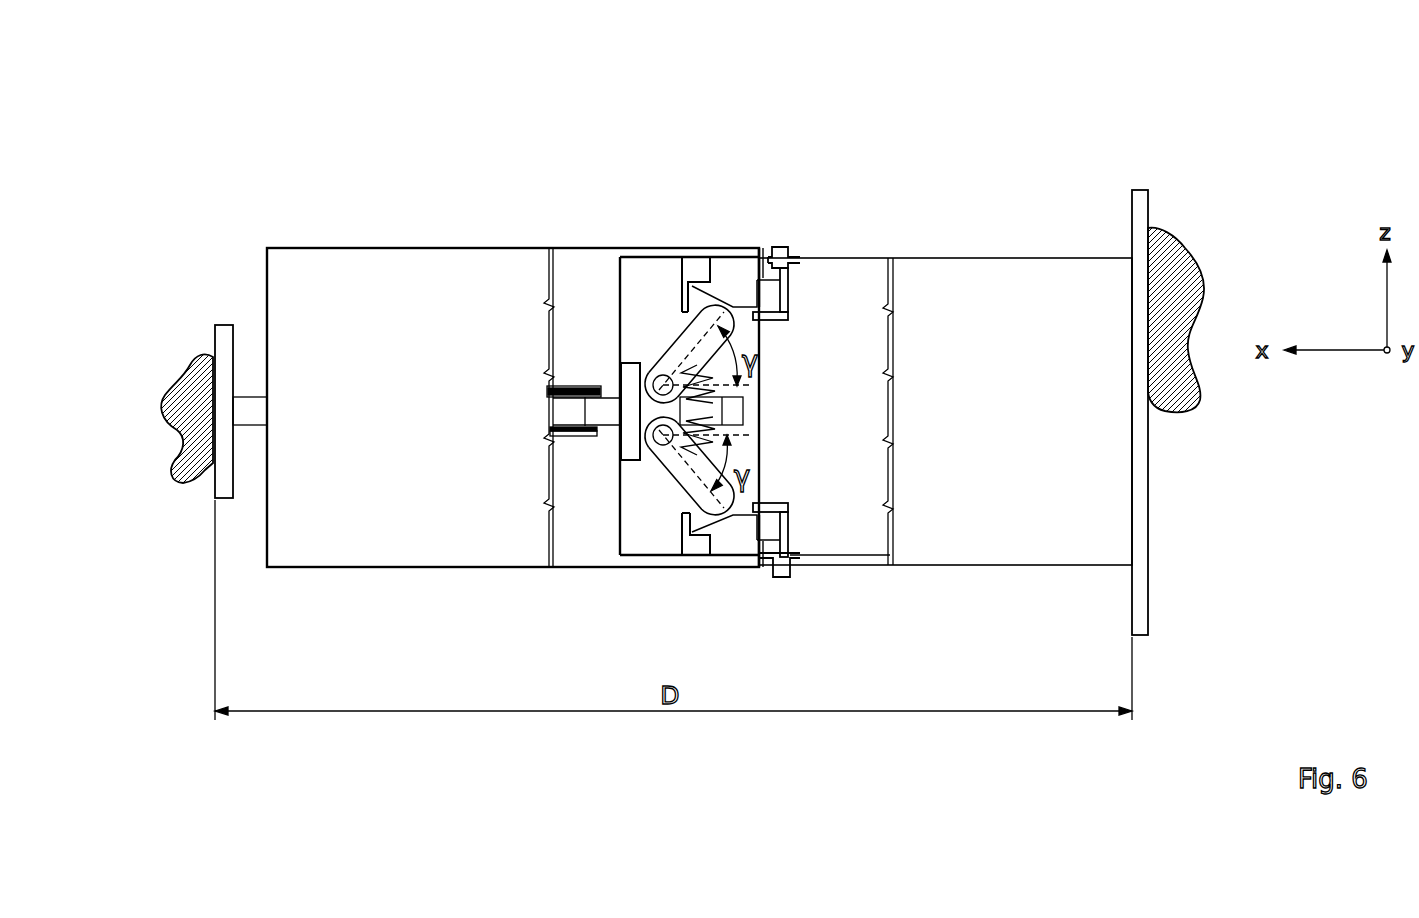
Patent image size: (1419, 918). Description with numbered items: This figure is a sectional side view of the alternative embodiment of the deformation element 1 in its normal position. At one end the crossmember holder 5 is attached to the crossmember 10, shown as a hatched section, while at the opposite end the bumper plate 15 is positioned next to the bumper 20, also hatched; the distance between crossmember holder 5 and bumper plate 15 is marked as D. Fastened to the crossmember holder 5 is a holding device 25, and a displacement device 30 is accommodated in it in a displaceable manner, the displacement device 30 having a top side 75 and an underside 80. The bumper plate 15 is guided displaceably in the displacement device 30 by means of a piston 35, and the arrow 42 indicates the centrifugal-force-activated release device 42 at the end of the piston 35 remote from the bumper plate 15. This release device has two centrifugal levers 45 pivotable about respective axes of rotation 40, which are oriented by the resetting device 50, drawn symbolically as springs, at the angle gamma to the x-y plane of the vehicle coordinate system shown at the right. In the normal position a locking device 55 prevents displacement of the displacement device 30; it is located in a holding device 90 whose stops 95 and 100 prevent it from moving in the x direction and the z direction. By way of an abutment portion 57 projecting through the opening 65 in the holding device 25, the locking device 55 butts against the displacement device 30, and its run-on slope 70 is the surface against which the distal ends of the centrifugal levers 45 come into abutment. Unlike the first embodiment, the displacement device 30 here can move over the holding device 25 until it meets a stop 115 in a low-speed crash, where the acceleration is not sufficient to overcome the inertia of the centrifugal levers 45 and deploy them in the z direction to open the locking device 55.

The deformation element 1 is at (352, 200).
The crossmember holder 5 is at (1137, 213).
The crossmember 10 is at (1178, 289).
The bumper plate 15 is at (225, 342).
The bumper 20 is at (168, 420).
The holding device 25 is at (1053, 378).
The displacement device 30 is at (467, 275).
The piston 35 is at (248, 417).
The axes of rotation 40 is at (661, 392).
The centrifugal-force-activated release device 42 is at (583, 445).
The centrifugal levers 45 is at (672, 357).
The resetting device 50 is at (697, 433).
The locking device 55 is at (720, 543).
The abutment portion 57 is at (712, 522).
The openings 65 is at (783, 535).
The run-on slope 70 is at (768, 562).
The top side 75 is at (640, 247).
The underside 80 is at (623, 573).
The holding device 90 is at (782, 322).
The stop 95 is at (789, 320).
The stop 100 is at (771, 504).
The stop 115 is at (783, 262).